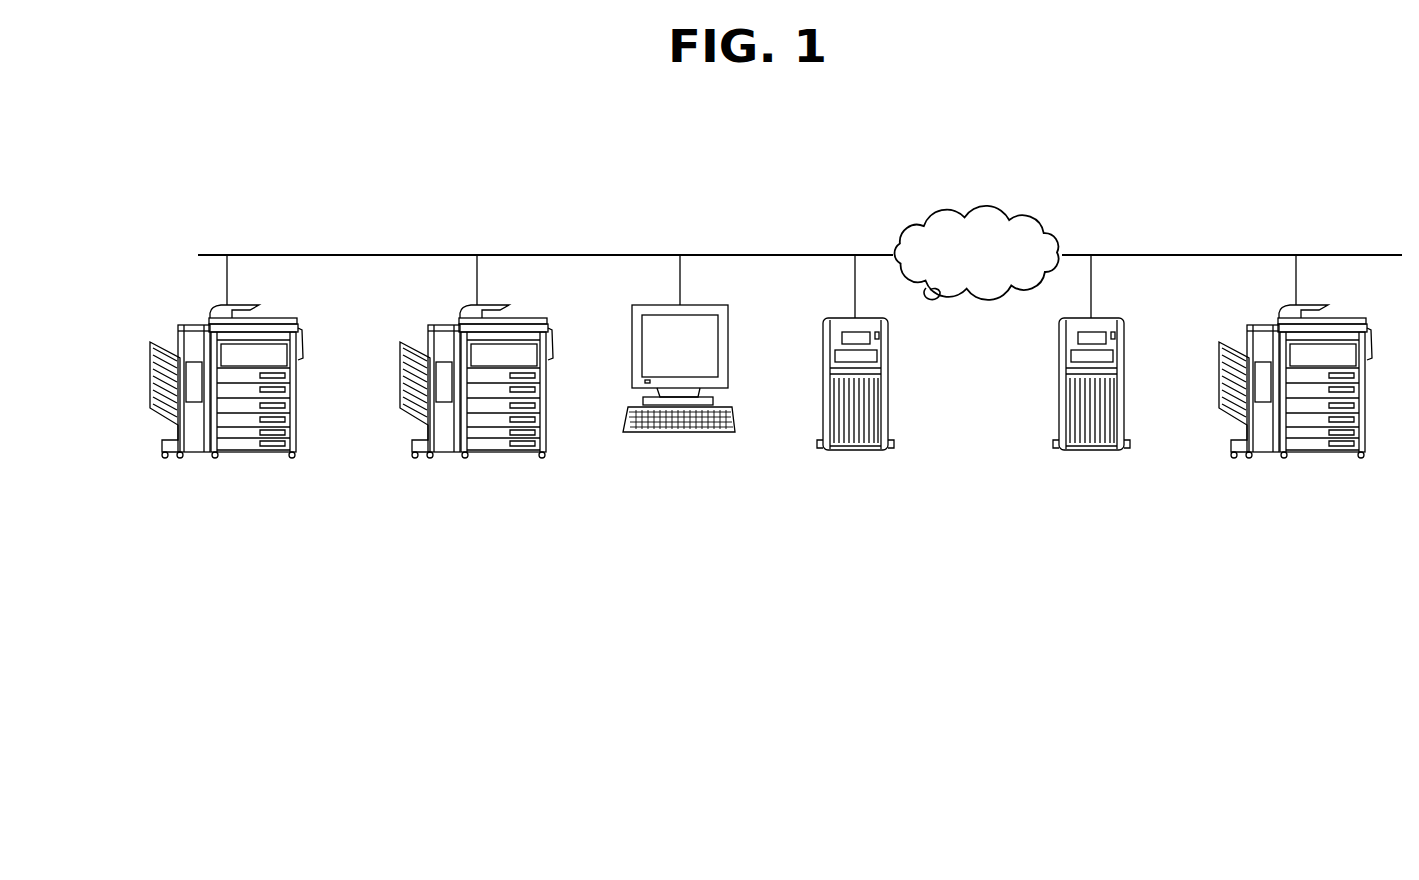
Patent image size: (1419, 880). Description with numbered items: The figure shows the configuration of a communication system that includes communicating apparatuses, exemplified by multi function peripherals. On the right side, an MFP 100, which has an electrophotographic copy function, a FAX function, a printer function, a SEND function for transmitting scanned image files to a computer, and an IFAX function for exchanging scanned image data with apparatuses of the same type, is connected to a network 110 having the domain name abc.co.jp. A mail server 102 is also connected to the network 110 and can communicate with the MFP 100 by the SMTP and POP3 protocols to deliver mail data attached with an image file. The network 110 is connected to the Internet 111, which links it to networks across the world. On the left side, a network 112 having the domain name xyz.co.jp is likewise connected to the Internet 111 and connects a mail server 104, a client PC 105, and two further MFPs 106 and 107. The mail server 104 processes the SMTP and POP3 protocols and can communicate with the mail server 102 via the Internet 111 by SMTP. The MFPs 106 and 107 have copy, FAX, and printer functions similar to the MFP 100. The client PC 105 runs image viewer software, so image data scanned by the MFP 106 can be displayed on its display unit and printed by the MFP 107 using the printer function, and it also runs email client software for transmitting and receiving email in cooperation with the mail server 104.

The MFP 100 is at (1357, 316).
The mail server 102 is at (1110, 318).
The mail server 104 is at (888, 333).
The client PC 105 is at (722, 305).
The MFP 106 is at (526, 318).
The MFP 107 is at (287, 318).
The network 110 is at (1343, 254).
The Internet 111 is at (1001, 215).
The network 112 is at (815, 254).